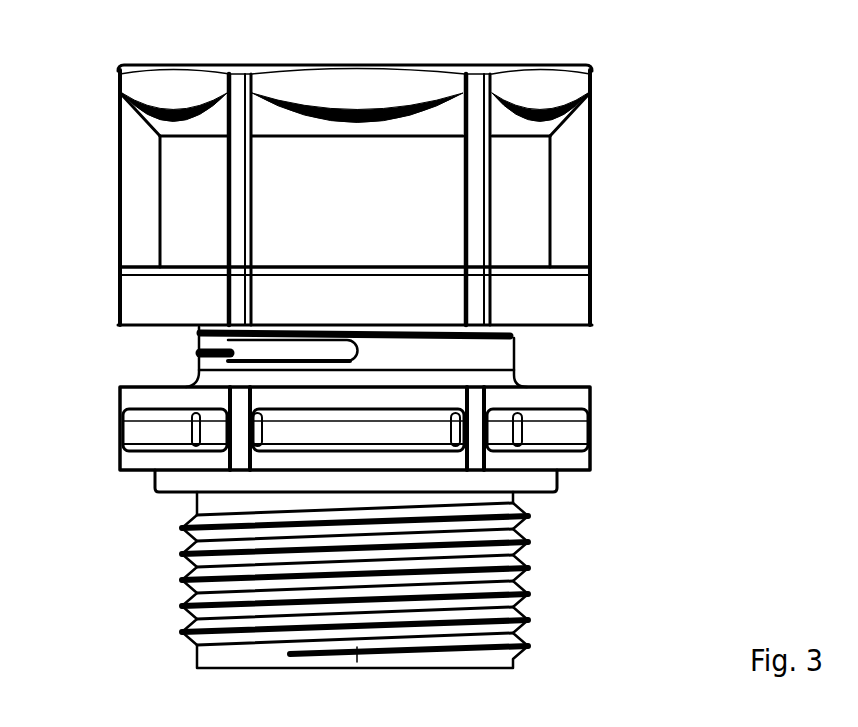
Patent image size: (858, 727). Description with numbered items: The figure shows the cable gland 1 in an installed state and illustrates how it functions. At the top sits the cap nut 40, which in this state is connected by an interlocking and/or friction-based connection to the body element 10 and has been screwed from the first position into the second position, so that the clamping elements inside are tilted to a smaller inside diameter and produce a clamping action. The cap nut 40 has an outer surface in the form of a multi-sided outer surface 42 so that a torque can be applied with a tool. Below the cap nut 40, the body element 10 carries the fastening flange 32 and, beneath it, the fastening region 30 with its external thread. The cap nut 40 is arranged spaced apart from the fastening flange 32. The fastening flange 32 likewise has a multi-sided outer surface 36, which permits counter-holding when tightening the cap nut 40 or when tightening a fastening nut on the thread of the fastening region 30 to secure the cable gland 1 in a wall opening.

The cable gland 1 is at (603, 90).
The cap nut 40 is at (573, 189).
The multi-sided outer surface 42 is at (488, 297).
The body element 10 is at (485, 347).
The multi-sided outer surface 36 is at (513, 417).
The fastening flange 32 is at (520, 457).
The fastening region 30 is at (527, 566).